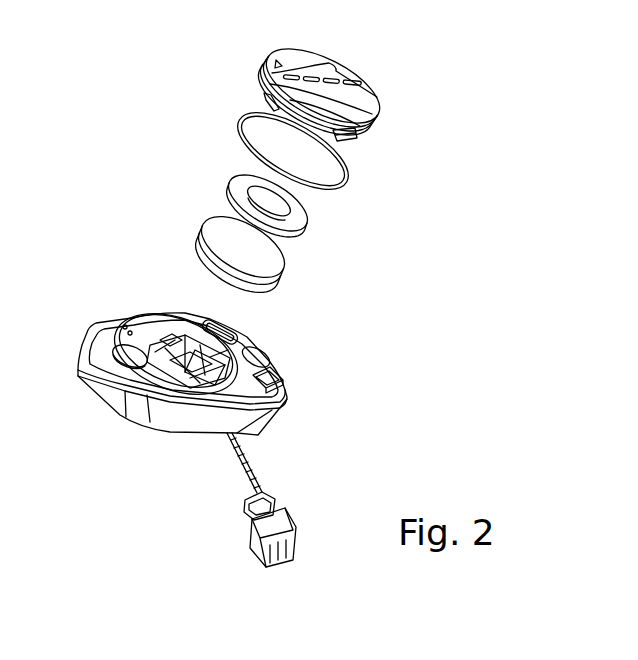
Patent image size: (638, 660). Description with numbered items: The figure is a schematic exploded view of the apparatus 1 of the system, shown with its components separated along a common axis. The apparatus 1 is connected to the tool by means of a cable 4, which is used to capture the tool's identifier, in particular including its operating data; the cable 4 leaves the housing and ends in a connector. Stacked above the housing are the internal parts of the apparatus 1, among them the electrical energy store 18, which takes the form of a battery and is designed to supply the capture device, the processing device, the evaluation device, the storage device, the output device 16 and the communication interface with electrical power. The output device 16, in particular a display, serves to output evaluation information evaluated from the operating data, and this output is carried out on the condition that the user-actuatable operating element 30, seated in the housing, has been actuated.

The apparatus 1 is at (143, 168).
The cable 4 is at (235, 458).
The output device 16 is at (282, 379).
The electrical energy store 18 is at (278, 279).
The user-actuatable operating element 30 is at (238, 331).